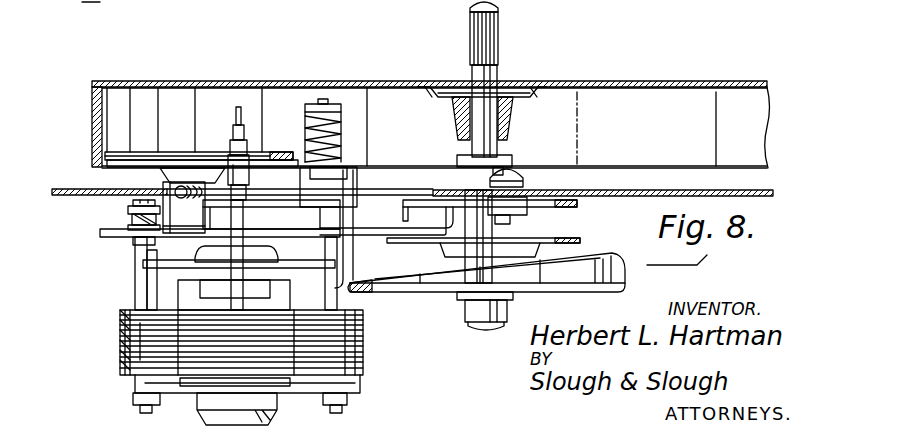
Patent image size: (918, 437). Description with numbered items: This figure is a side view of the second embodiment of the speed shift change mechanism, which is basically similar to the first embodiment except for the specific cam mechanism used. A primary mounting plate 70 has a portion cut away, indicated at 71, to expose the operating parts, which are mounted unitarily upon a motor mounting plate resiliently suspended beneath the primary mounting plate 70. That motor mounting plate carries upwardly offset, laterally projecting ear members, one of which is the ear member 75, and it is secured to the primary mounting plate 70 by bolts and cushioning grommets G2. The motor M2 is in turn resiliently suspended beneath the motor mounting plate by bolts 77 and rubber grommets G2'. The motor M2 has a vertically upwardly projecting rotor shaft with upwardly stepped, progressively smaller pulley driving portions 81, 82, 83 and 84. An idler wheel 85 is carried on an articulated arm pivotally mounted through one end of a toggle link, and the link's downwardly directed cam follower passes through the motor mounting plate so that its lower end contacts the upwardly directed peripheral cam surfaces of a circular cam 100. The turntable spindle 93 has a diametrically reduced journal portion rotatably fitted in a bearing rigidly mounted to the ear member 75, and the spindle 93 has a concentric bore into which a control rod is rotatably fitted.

The primary mounting plate 70 is at (618, 199).
The cut-away portion 71 is at (402, 191).
The ear member 75 is at (548, 207).
The bolts 77 is at (128, 203).
The pulley driving portion 81 is at (249, 168).
The pulley driving portion 82 is at (246, 142).
The pulley driving portion 83 is at (243, 126).
The pulley driving portion 84 is at (240, 107).
The idler wheel 85 is at (211, 152).
The turntable spindle 93 is at (496, 146).
The circular cam 100 is at (582, 296).
The cushioning grommets G2 is at (245, 193).
The rubber grommets G2' is at (104, 241).
The motor M2 is at (120, 312).